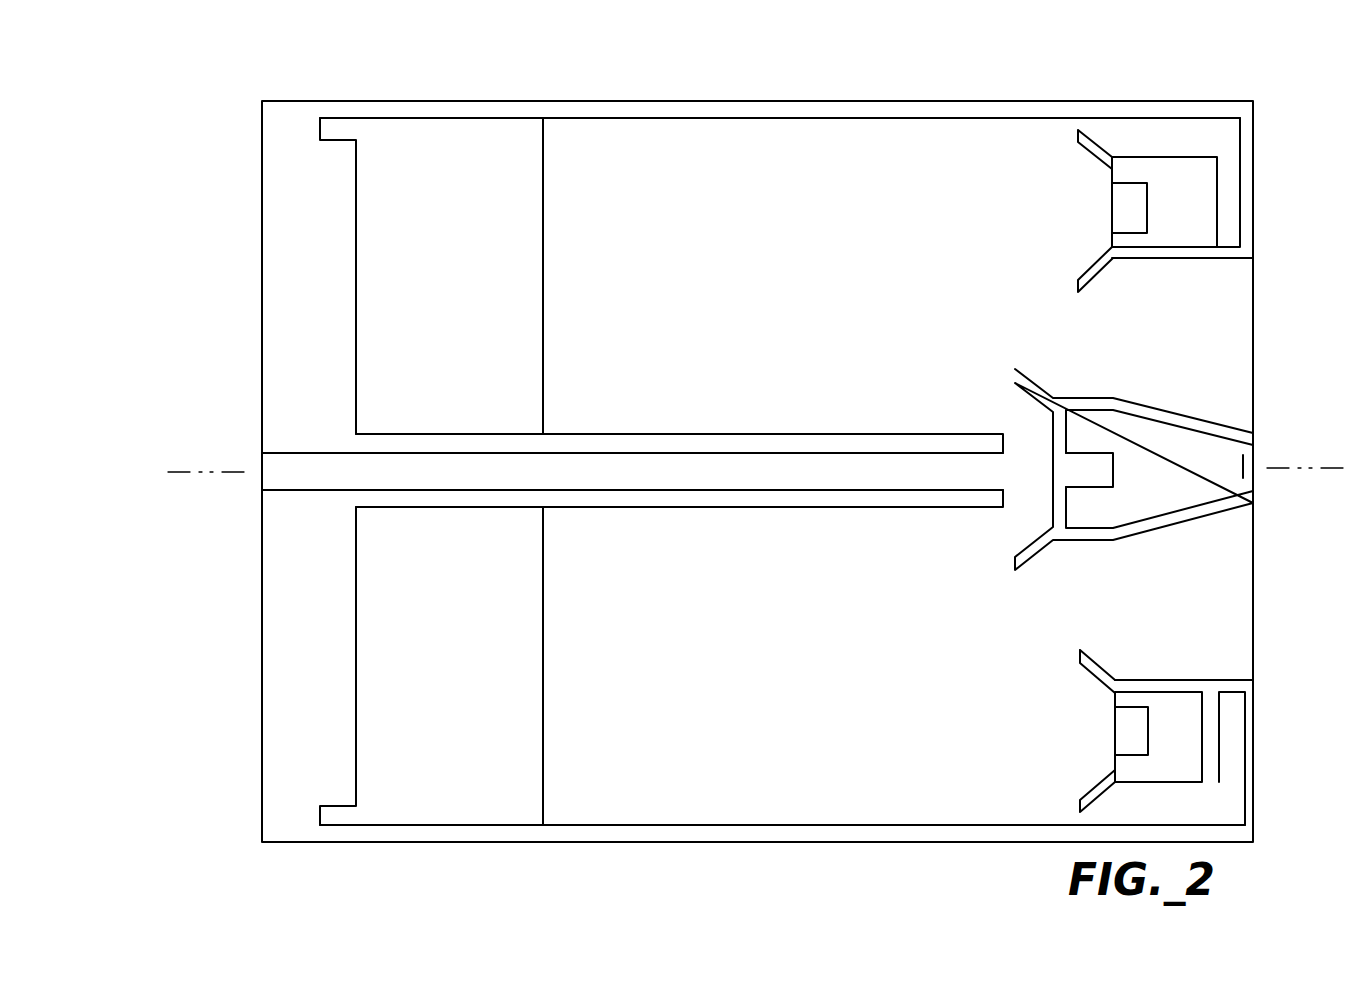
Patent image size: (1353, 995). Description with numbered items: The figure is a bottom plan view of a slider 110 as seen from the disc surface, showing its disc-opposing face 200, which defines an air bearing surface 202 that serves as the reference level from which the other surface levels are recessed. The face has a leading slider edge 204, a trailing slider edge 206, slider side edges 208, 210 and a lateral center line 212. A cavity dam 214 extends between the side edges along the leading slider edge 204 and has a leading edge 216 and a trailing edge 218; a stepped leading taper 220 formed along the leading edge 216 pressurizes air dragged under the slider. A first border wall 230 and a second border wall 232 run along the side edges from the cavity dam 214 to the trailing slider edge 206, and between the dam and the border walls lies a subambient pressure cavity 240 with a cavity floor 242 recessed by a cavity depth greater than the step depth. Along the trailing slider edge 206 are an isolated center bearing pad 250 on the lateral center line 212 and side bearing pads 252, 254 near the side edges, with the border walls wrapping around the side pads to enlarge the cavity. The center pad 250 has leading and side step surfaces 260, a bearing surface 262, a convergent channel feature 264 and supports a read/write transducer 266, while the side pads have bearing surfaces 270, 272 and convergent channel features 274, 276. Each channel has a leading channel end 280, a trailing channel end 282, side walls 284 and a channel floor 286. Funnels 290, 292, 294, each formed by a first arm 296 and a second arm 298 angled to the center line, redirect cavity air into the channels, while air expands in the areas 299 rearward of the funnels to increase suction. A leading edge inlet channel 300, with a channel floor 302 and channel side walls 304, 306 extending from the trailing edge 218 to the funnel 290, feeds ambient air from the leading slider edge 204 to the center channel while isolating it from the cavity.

The slider 110 is at (240, 78).
The disc-opposing face 200 is at (680, 65).
The bearing surface 202 is at (438, 121).
The leading slider edge 204 is at (260, 755).
The trailing slider edge 206 is at (1255, 628).
The slider side edge 208 is at (477, 98).
The slider side edge 210 is at (478, 845).
The lateral center line 212 is at (188, 472).
The cavity dam 214 is at (456, 262).
The leading edge of cavity dam 216 is at (350, 333).
The trailing edge of cavity dam 218 is at (545, 340).
The stepped leading taper 220 is at (297, 258).
The first border wall 230 is at (838, 100).
The second border wall 232 is at (735, 830).
The subambient pressure cavity 240 is at (726, 628).
The cavity floor 242 is at (782, 660).
The center bearing pad 250 is at (1222, 417).
The side bearing pad 252 is at (1223, 187).
The side bearing pad 254 is at (1231, 707).
The leading and side step surfaces 260 is at (1077, 402).
The bearing surface of center pad 262 is at (1157, 433).
The convergent channel feature 264 is at (1060, 476).
The read/write transducer 266 is at (1245, 468).
The bearing surface of side pad 270 is at (1198, 203).
The bearing surface of side pad 272 is at (1188, 727).
The convergent channel feature 274 is at (1116, 213).
The convergent channel feature 276 is at (1119, 737).
The leading channel end 280 is at (1112, 203).
The trailing channel end 282 is at (1147, 202).
The channel side walls 284 is at (1120, 183).
The channel floor 286 is at (1128, 213).
The funnel 290 is at (1014, 396).
The funnel 292 is at (1086, 161).
The funnel 294 is at (1085, 682).
The first arm 296 is at (1095, 137).
The second arm 298 is at (1103, 273).
The areas rearward of funnels 299 is at (1203, 132).
The leading edge inlet channel 300 is at (693, 477).
The channel floor 302 is at (582, 463).
The channel side wall 304 is at (798, 442).
The channel side wall 306 is at (732, 500).